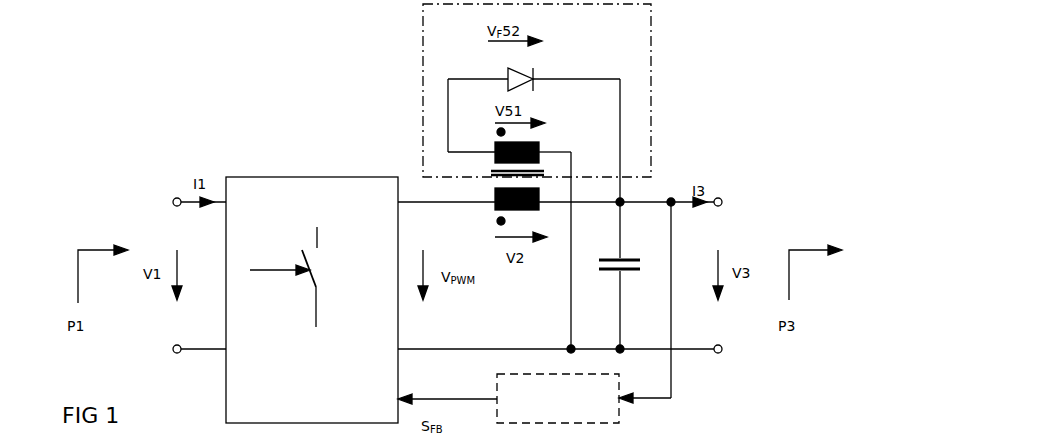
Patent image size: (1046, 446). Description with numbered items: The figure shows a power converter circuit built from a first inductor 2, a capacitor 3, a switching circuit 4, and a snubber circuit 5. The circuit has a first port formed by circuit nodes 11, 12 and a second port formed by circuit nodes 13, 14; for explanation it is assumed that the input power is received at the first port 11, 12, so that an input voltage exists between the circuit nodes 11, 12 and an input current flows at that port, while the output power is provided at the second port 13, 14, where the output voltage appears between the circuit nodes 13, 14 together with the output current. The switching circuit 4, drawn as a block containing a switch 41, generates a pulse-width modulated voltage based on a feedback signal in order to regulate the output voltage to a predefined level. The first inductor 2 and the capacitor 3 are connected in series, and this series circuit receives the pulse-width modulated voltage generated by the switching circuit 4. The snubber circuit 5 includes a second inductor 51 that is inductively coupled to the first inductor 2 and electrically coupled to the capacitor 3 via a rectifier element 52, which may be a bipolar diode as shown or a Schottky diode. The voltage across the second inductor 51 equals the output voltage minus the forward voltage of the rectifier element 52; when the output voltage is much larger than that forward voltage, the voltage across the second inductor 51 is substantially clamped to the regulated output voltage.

The first inductor 2 is at (486, 214).
The capacitor 3 is at (630, 258).
The switching circuit 4 is at (302, 177).
The switch 41 is at (312, 265).
The snubber circuit 5 is at (558, 176).
The second inductor 51 is at (546, 142).
The rectifier element 52 is at (540, 70).
The circuit node 11 is at (170, 200).
The circuit node 12 is at (170, 350).
The circuit node 13 is at (726, 200).
The circuit node 14 is at (726, 352).